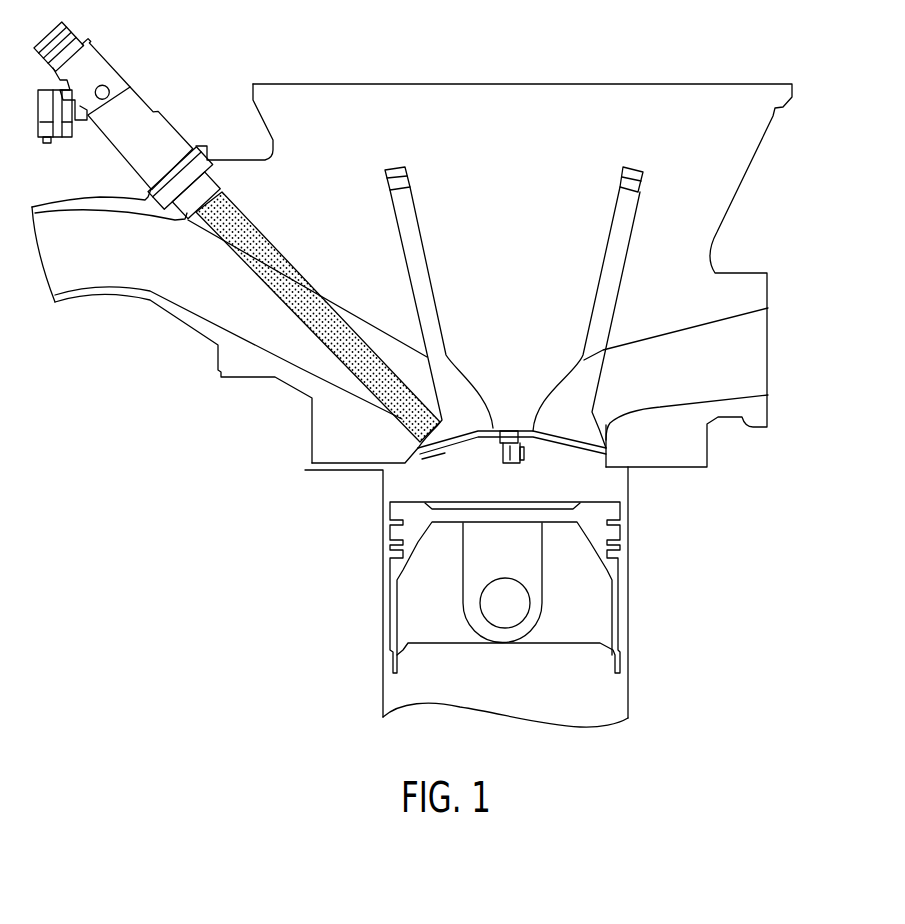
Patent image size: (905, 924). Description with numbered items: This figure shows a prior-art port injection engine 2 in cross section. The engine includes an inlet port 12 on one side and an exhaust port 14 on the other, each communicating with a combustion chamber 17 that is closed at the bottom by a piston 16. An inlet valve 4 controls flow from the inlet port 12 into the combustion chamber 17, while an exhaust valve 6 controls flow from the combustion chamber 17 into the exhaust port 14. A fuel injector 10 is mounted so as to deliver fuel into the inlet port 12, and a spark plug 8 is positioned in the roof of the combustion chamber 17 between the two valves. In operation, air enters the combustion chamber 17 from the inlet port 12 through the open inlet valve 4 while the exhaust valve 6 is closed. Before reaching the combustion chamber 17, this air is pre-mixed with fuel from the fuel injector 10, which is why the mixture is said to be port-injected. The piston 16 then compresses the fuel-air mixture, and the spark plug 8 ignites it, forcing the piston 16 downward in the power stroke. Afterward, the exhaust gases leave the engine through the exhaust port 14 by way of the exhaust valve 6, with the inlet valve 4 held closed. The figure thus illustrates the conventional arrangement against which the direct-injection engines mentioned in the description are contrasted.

The port injection engine 2 is at (806, 72).
The inlet valve 4 is at (405, 217).
The exhaust valve 6 is at (620, 215).
The spark plug 8 is at (530, 468).
The fuel injector 10 is at (153, 131).
The inlet port 12 is at (193, 293).
The exhaust port 14 is at (638, 390).
The piston 16 is at (585, 597).
The combustion chamber 17 is at (397, 480).